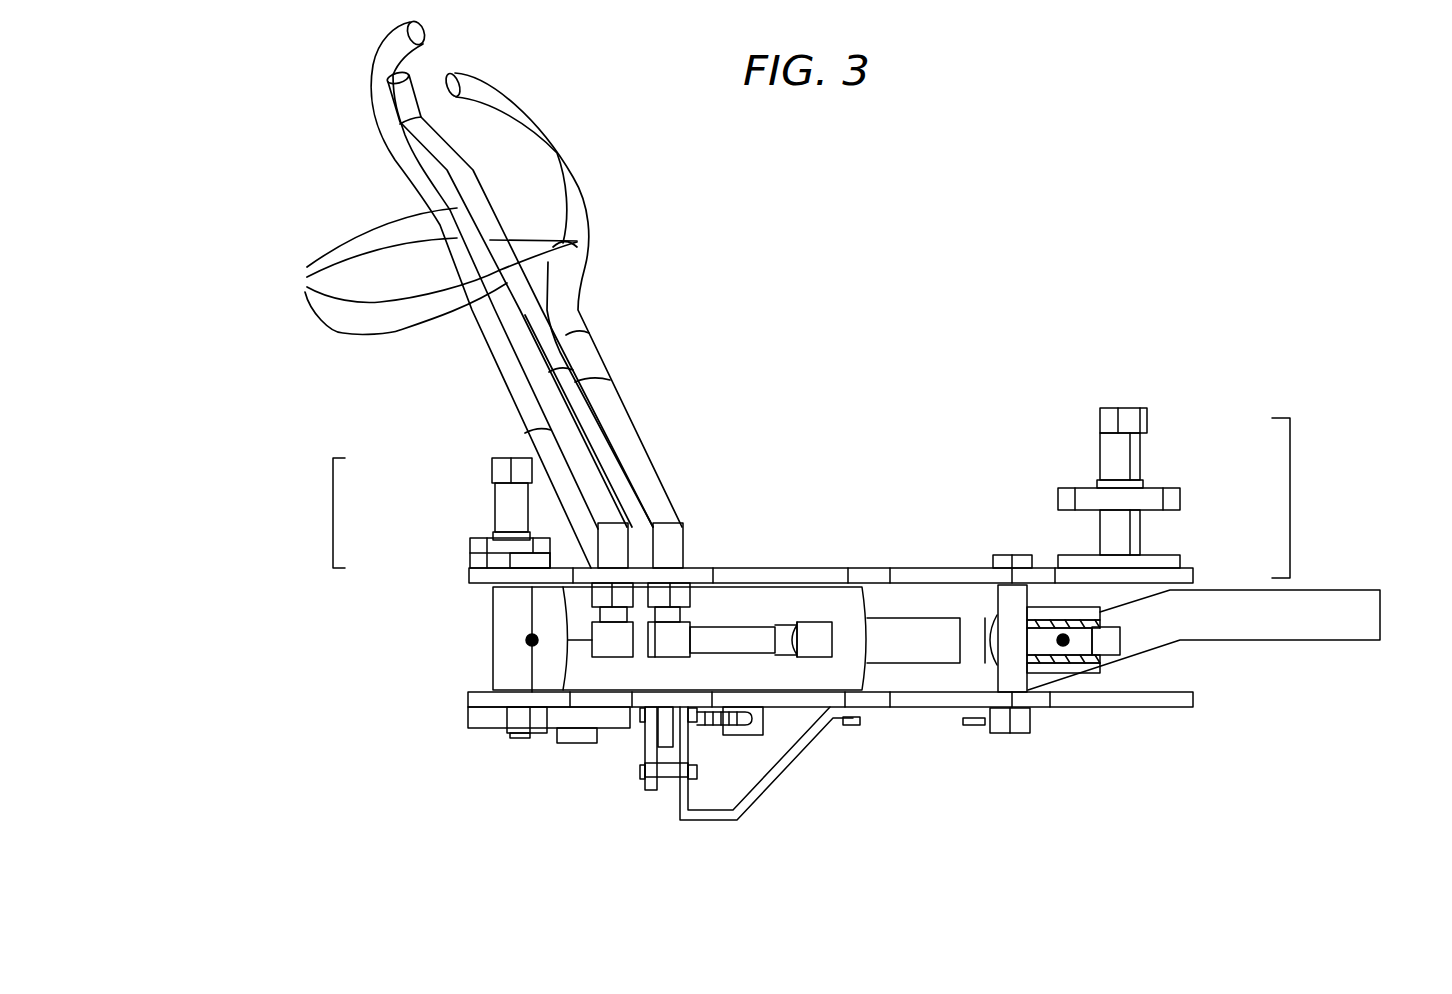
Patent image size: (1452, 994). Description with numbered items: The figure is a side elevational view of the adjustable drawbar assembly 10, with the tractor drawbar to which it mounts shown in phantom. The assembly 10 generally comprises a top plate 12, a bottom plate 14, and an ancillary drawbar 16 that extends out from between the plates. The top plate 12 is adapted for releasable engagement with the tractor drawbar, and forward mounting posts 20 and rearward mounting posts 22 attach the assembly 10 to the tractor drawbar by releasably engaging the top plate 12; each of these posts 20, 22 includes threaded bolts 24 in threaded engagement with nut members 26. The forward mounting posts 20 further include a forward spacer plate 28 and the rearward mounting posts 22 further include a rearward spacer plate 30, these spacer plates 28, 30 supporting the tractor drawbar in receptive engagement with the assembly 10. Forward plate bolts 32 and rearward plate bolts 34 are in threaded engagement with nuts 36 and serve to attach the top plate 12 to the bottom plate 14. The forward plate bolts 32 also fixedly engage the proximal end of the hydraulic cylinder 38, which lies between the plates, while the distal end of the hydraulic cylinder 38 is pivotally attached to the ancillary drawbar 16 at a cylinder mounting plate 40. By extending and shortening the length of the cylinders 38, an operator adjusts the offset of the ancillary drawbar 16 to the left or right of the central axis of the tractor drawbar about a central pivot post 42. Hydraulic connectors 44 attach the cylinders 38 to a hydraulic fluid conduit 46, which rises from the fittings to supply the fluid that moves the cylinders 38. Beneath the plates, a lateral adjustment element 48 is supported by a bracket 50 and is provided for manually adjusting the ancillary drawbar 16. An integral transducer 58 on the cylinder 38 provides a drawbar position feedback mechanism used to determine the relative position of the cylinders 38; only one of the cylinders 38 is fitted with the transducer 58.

The adjustable drawbar assembly 10 is at (897, 233).
The top plate 12 is at (1193, 575).
The bottom plate 14 is at (1185, 700).
The ancillary drawbar 16 is at (1335, 610).
The forward mounting posts 20 is at (333, 510).
The rearward mounting posts 22 is at (1290, 497).
The threaded bolts 24 is at (500, 510).
The nut members 26 is at (503, 472).
The forward spacer plate 28 is at (483, 558).
The rearward spacer plate 30 is at (1175, 498).
The forward plate bolts 32 is at (522, 560).
The rearward plate bolts 34 is at (1010, 553).
The nuts 36 is at (522, 722).
The hydraulic cylinders 38 is at (815, 682).
The cylinder mounting plate 40 is at (1112, 642).
The central pivot post 42 is at (590, 740).
The hydraulic connectors 44 is at (695, 540).
The hydraulic fluid conduit 46 is at (472, 293).
The lateral adjustment element 48 is at (643, 832).
The bracket 50 is at (778, 770).
The integral transducer 58 is at (532, 640).